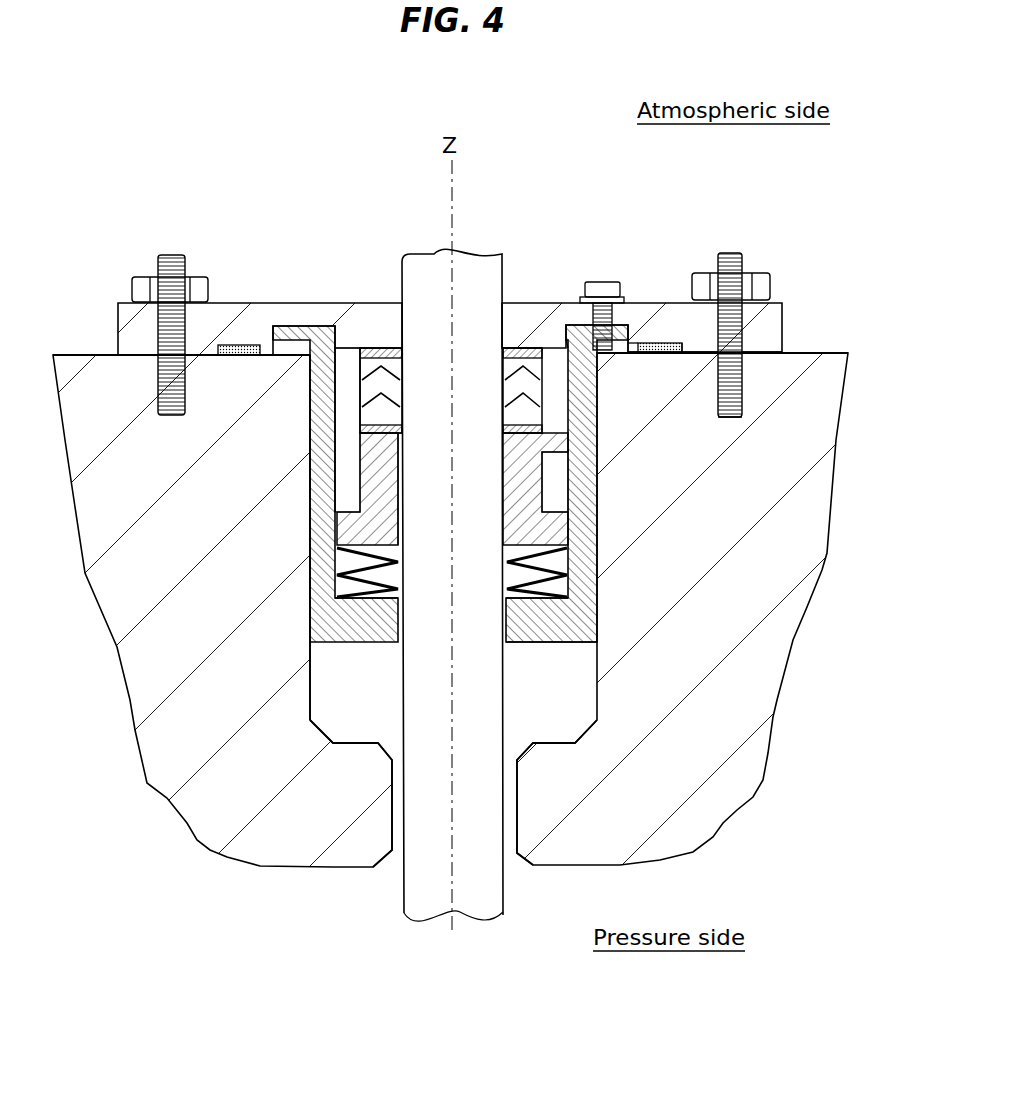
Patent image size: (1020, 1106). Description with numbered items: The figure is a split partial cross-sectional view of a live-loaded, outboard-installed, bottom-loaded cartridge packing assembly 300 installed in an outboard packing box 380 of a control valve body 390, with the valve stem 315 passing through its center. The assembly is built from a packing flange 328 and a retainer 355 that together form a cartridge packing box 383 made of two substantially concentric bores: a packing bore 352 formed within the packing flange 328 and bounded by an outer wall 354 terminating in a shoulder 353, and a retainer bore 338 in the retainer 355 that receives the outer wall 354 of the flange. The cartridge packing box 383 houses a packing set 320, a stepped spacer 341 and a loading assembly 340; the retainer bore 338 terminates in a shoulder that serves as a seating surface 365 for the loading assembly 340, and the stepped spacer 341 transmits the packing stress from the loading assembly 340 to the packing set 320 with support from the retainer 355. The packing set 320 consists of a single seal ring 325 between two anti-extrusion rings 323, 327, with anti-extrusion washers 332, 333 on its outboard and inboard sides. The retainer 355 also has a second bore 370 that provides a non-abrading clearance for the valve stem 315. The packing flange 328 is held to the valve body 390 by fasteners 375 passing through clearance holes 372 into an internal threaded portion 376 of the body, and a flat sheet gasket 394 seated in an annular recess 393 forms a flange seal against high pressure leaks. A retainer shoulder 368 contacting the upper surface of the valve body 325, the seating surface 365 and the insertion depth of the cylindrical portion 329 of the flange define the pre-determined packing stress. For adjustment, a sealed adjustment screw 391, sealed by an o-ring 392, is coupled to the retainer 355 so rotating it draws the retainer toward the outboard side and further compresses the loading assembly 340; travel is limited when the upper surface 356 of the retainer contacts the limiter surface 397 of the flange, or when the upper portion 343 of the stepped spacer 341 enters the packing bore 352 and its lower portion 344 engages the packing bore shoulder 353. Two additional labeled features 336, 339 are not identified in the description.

The cartridge packing assembly 300 is at (296, 226).
The valve stem 315 is at (415, 255).
The packing set 320 is at (348, 405).
The anti-extrusion ring 323 is at (582, 362).
The seal ring 325 is at (817, 352).
The anti-extrusion ring 327 is at (650, 395).
The packing flange 328 is at (118, 340).
The cylindrical portion 329 is at (372, 350).
The anti-extrusion washer 332 is at (290, 326).
The anti-extrusion washer 333 is at (345, 450).
The sleeve 336 is at (396, 346).
The retainer bore 338 is at (560, 512).
The housing bore wall 339 is at (322, 692).
The loading assembly 340 is at (560, 602).
The stepped spacer 341 is at (565, 560).
The upper portion 343 is at (582, 488).
The lower portion 344 is at (370, 505).
The packing bore 352 is at (325, 468).
The packing bore shoulder 353 is at (576, 458).
The outer wall 354 is at (702, 354).
The retainer 355 is at (550, 640).
The upper surface 356 is at (540, 345).
The shoulder 365 is at (384, 642).
The retainer shoulder 368 is at (270, 357).
The second bore 370 is at (397, 858).
The clearance holes 372 is at (745, 356).
The fasteners 375 is at (778, 248).
The internal threaded portion 376 is at (742, 412).
The outboard packing box 380 is at (598, 740).
The cartridge packing box 383 is at (345, 558).
The control valve body 390 is at (165, 770).
The adjustment screw 391 is at (599, 276).
The o-ring 392 is at (638, 343).
The annular recess 393 is at (675, 348).
The flat sheet gasket 394 is at (665, 352).
The limiter surface 397 is at (645, 350).